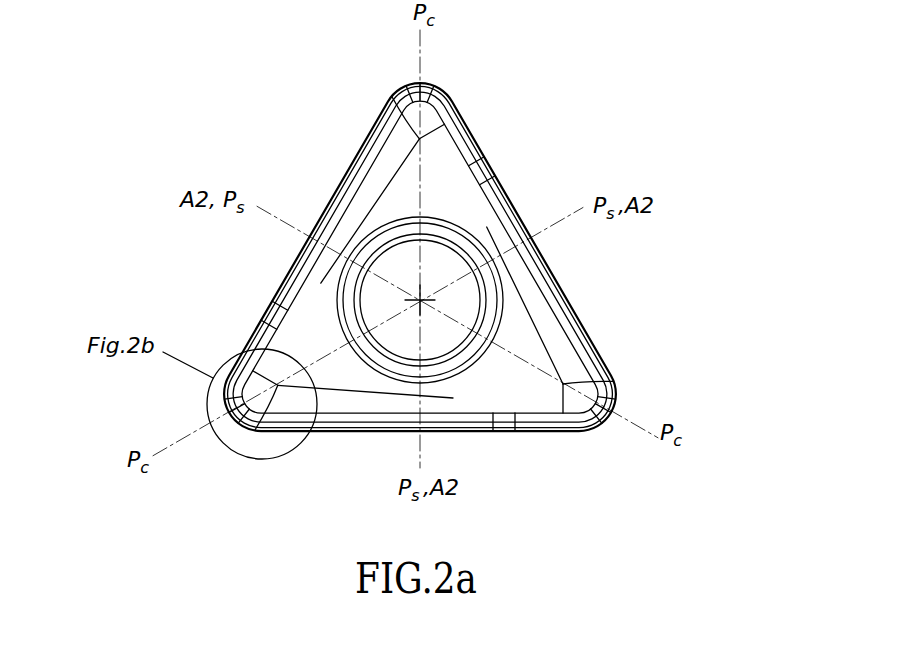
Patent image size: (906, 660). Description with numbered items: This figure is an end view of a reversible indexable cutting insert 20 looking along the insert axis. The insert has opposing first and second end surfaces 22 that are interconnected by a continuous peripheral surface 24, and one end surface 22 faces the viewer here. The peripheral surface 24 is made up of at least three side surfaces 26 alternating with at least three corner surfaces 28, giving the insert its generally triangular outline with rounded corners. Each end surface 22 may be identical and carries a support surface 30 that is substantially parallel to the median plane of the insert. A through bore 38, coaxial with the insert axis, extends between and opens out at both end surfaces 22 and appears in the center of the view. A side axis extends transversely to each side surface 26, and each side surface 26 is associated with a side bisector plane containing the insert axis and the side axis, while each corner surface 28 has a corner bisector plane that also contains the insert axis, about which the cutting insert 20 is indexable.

The cutting insert 20 is at (555, 162).
The end surfaces 22 is at (523, 302).
The peripheral surface 24 is at (363, 433).
The side surfaces 26 is at (472, 119).
The corner surfaces 28 is at (415, 83).
The support surface 30 is at (388, 202).
The through bore 38 is at (440, 261).